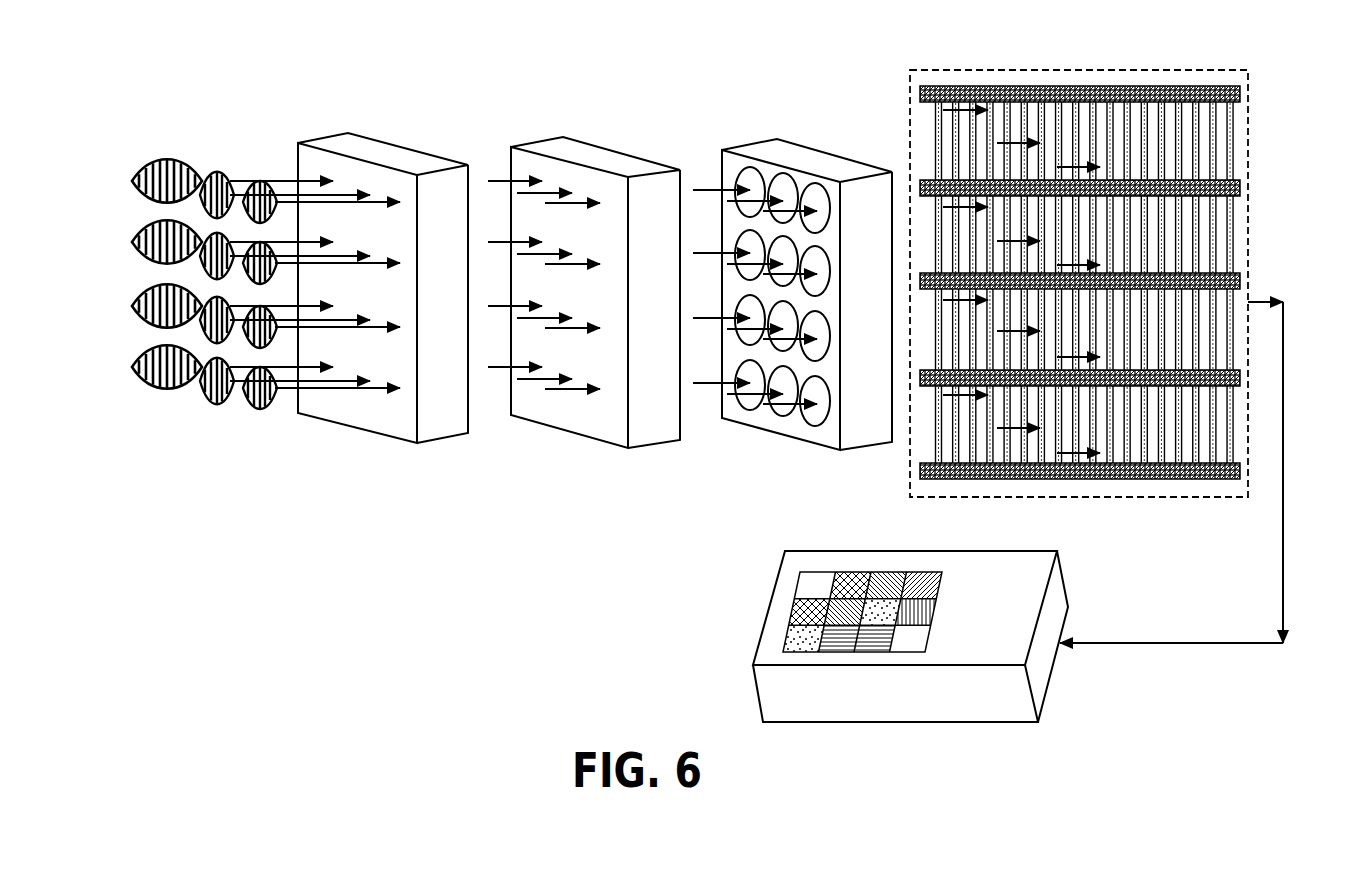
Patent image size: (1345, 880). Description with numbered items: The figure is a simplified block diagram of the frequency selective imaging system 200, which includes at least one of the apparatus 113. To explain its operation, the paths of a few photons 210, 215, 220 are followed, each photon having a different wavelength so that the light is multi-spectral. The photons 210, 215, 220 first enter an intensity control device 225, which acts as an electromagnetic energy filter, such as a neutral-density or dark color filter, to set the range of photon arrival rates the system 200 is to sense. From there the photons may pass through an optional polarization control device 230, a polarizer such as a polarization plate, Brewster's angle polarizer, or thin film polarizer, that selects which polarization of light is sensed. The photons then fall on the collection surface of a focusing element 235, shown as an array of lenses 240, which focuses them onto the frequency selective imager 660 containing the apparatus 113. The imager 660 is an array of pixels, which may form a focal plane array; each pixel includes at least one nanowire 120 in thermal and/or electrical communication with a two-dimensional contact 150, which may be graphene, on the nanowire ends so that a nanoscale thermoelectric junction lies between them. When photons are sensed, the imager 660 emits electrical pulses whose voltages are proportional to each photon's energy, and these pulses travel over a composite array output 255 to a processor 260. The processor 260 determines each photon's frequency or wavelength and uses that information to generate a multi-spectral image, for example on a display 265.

The frequency selective imaging system 200 is at (527, 542).
The photon 210 is at (262, 177).
The photon 215 is at (225, 170).
The photon 220 is at (163, 160).
The intensity control device 225 is at (322, 135).
The polarization control device 230 is at (527, 142).
The focusing element 235 is at (748, 147).
The lens 240 is at (788, 418).
The frequency selective imager 660 is at (1013, 70).
The apparatus 113 is at (1208, 82).
The nanowire 120 is at (1212, 230).
The 2-dimensional contact 150 is at (1240, 283).
The composite array output 255 is at (1208, 643).
The processor 260 is at (768, 603).
The display 265 is at (887, 572).